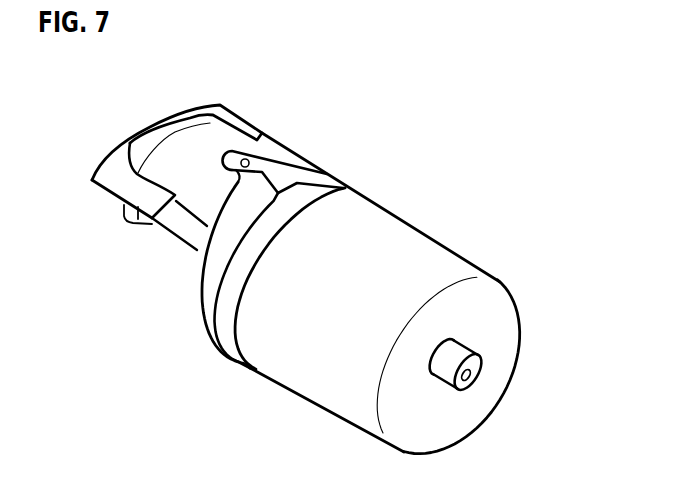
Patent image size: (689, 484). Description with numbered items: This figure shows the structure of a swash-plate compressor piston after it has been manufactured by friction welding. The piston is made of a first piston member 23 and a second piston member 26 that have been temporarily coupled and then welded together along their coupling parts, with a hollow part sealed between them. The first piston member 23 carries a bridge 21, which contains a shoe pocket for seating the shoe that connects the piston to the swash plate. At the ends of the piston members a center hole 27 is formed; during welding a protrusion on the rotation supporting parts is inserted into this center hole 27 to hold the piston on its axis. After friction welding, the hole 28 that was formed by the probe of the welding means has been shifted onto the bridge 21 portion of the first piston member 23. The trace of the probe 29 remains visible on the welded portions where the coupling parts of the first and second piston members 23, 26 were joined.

The bridge 21 is at (203, 193).
The first piston member 23 is at (112, 173).
The second piston member 26 is at (400, 243).
The center hole 27 is at (472, 376).
The hole 28 is at (240, 152).
The trace of the probe 29 is at (224, 292).